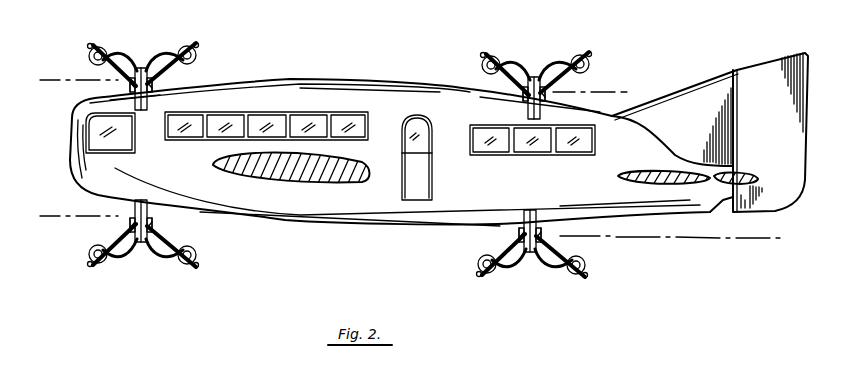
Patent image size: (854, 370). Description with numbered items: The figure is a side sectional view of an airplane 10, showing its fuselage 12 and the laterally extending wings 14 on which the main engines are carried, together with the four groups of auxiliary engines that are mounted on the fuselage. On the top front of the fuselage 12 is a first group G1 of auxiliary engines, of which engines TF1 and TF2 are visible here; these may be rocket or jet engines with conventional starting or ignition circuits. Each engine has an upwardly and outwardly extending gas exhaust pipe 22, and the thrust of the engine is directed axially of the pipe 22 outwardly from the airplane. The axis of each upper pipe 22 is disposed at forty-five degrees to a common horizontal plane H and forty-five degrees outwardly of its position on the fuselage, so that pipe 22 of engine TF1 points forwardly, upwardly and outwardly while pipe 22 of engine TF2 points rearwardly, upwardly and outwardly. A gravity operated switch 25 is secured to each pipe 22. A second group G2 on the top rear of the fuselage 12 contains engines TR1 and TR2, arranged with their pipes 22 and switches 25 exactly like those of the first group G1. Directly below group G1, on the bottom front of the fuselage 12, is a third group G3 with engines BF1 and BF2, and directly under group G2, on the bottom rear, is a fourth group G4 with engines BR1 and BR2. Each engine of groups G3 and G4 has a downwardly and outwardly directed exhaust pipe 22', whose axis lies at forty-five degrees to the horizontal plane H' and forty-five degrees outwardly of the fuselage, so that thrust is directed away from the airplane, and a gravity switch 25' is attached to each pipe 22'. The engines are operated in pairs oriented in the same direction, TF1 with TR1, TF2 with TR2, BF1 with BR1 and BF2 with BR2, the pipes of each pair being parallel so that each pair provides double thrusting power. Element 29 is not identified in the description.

The airplane 10 is at (392, 225).
The fuselage 12 is at (378, 117).
The wings 14 is at (300, 182).
The gas exhaust pipe 22 is at (341, 52).
The exhaust pipe 22' is at (332, 267).
The gravity operated switch 25 is at (349, 42).
The gravity switch 25' is at (360, 274).
The swing arm 29 is at (188, 46).
The first group of auxiliary engines G1 is at (150, 53).
The second group of auxiliary engines G2 is at (502, 92).
The third group of auxiliary engines G3 is at (141, 259).
The fourth group of auxiliary engines G4 is at (535, 269).
The auxiliary engine TF1 is at (132, 82).
The auxiliary engine TF2 is at (168, 80).
The auxiliary engine TR1 is at (530, 73).
The auxiliary engine TR2 is at (542, 73).
The auxiliary engine BF1 is at (130, 212).
The auxiliary engine BF2 is at (155, 224).
The auxiliary engine BR1 is at (521, 228).
The auxiliary engine BR2 is at (554, 234).
The horizontal plane H is at (330, 86).
The horizontal plane H' is at (409, 227).